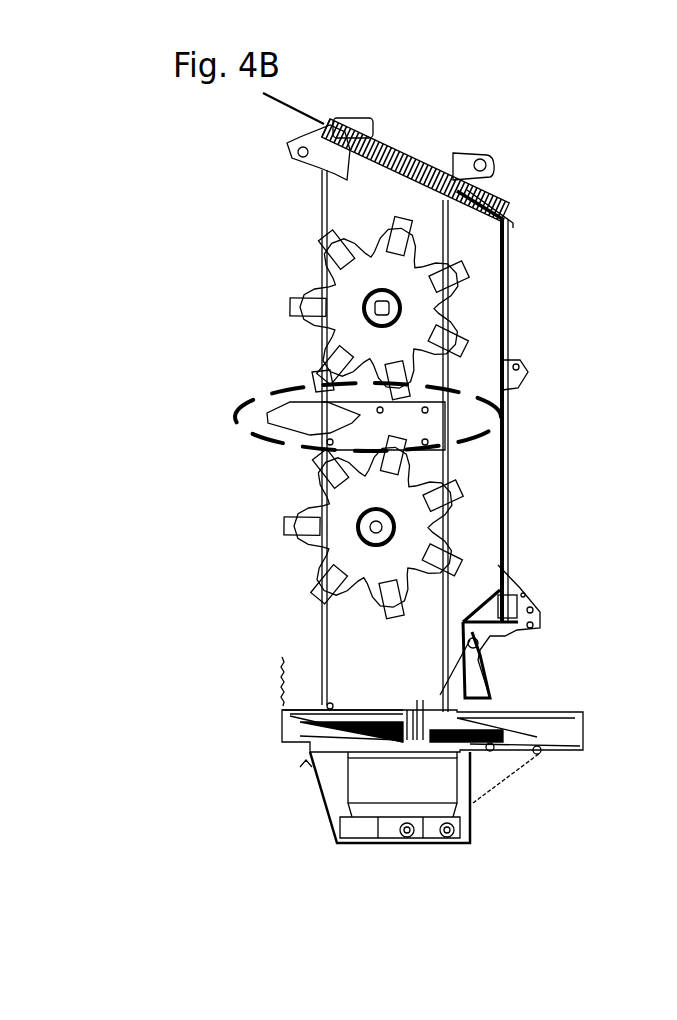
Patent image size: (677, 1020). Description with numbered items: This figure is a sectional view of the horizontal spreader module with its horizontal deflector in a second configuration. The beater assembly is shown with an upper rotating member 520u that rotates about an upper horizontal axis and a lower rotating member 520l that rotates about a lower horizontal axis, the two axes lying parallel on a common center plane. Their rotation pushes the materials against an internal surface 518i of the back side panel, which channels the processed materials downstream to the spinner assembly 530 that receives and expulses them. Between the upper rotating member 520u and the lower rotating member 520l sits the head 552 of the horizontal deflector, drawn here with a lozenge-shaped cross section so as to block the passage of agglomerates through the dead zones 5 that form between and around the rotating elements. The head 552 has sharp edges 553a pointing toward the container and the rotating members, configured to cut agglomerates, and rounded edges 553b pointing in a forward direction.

The upper rotating member 520u is at (262, 250).
The head 552 is at (258, 378).
The dead zones 5 is at (235, 417).
The rounded edges 553b is at (290, 404).
The sharp edges 553a is at (292, 446).
The lower rotating member 520l is at (277, 560).
The spinner assembly 530 is at (276, 811).
The internal surface 518i is at (500, 419).